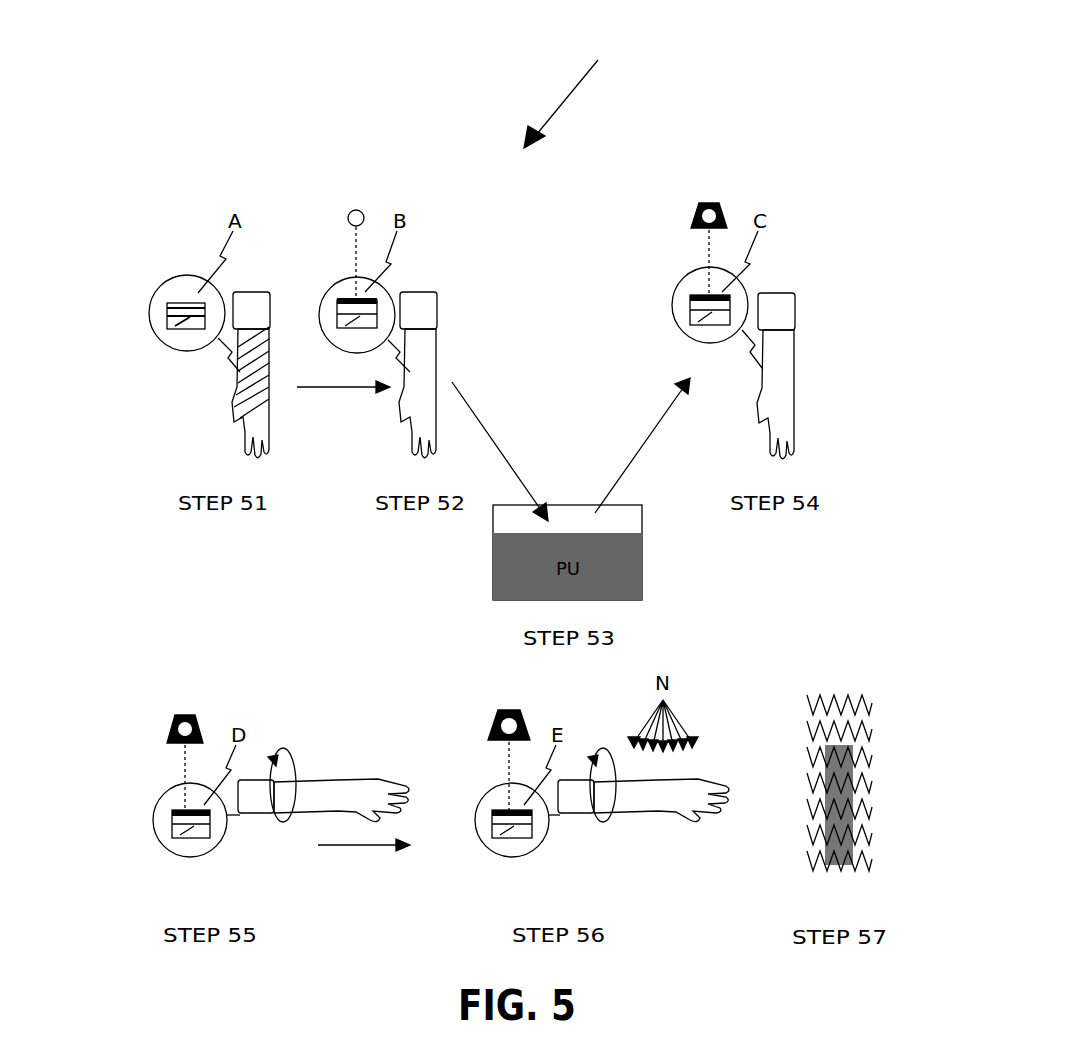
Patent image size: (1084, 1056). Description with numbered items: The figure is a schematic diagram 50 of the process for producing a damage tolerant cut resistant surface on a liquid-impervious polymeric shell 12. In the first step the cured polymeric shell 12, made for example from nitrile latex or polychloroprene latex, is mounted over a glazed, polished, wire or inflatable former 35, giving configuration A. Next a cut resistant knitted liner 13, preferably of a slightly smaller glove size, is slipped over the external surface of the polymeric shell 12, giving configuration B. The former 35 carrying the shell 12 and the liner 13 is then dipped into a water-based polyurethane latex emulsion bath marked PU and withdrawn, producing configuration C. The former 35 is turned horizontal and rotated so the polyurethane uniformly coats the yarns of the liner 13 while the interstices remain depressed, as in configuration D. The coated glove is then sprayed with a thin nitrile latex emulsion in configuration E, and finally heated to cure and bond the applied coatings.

The schematic diagram 50 is at (578, 83).
The former 35 is at (255, 298).
The liquid-impervious polymeric shell 12 is at (176, 319).
The cut resistant knitted liner 13 is at (338, 302).